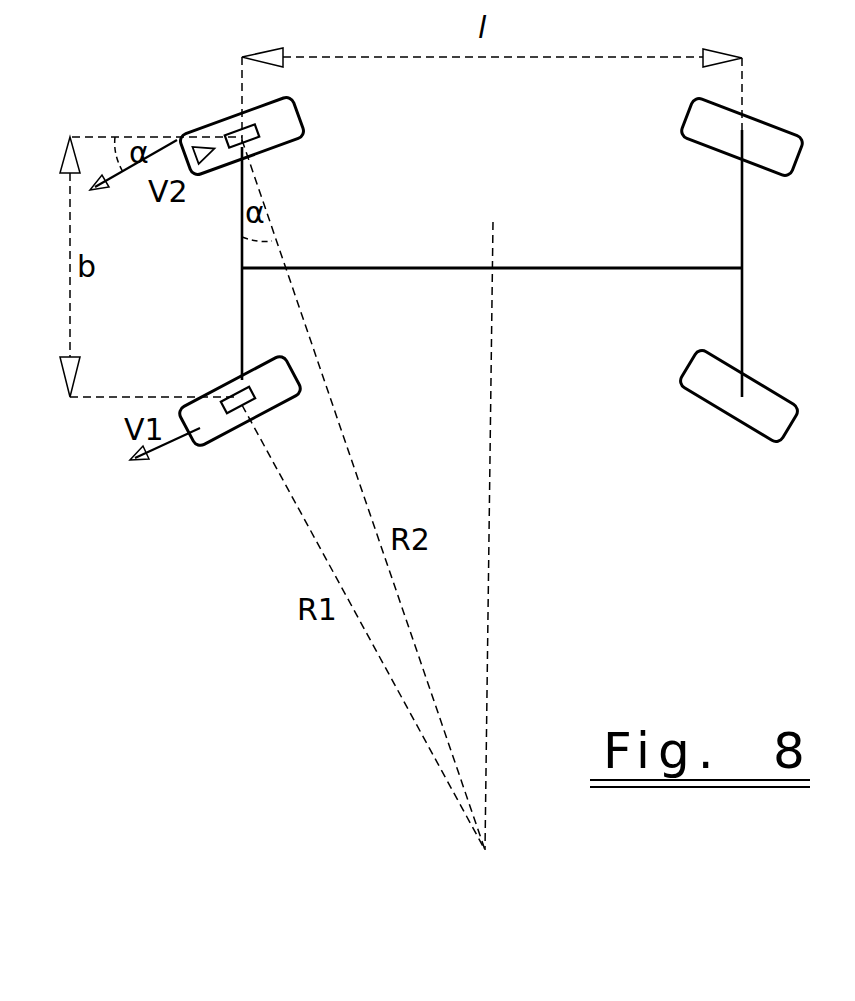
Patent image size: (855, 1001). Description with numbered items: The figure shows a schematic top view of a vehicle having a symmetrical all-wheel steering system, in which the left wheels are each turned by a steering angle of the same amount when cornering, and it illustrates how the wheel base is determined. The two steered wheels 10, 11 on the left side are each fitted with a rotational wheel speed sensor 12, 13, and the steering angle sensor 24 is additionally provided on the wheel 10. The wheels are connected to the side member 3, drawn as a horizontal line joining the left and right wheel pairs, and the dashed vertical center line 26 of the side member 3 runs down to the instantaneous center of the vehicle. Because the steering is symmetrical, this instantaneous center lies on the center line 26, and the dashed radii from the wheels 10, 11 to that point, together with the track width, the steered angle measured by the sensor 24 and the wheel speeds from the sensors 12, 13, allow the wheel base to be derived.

The side member 3 is at (603, 266).
The front wheel 10 is at (282, 108).
The front wheel 11 is at (200, 428).
The rotational wheel speed sensor 12 is at (237, 133).
The rotational wheel speed sensor 13 is at (240, 417).
The steering angle sensor 24 is at (177, 137).
The vertical center line 26 is at (490, 523).